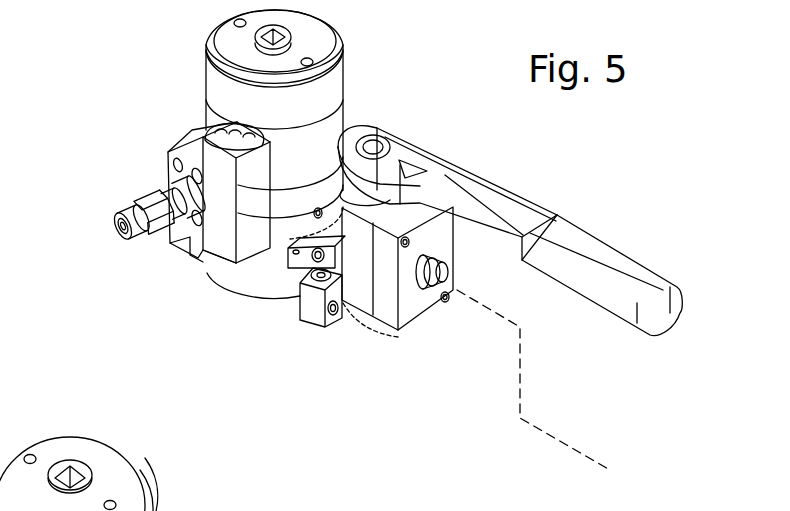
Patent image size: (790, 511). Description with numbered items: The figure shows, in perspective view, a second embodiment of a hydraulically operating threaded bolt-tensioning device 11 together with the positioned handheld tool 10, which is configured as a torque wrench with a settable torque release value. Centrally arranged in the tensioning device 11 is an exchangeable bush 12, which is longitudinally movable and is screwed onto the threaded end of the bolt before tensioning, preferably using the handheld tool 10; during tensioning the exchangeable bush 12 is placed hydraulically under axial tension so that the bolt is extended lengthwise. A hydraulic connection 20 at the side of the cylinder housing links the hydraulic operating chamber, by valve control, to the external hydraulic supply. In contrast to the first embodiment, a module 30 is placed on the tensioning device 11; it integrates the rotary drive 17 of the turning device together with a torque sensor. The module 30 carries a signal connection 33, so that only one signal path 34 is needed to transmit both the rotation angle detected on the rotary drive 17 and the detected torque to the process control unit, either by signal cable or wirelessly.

The handheld tool 10 is at (503, 204).
The tensioning device 11 is at (194, 87).
The exchangeable bush 12 is at (320, 38).
The rotary drive 17 is at (318, 303).
The hydraulic connection 20 is at (130, 209).
The module 30 is at (414, 304).
The signal connection 33 is at (447, 281).
The signal path 34 is at (575, 450).